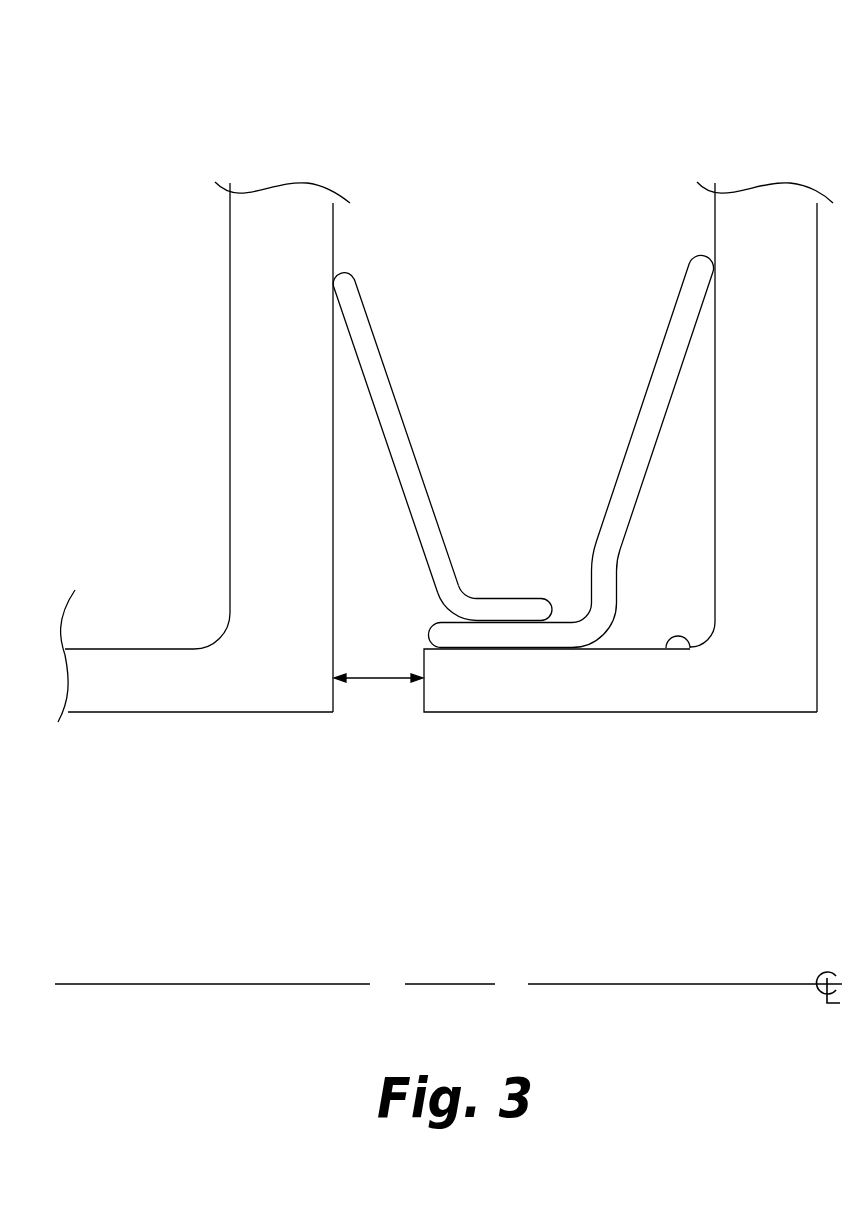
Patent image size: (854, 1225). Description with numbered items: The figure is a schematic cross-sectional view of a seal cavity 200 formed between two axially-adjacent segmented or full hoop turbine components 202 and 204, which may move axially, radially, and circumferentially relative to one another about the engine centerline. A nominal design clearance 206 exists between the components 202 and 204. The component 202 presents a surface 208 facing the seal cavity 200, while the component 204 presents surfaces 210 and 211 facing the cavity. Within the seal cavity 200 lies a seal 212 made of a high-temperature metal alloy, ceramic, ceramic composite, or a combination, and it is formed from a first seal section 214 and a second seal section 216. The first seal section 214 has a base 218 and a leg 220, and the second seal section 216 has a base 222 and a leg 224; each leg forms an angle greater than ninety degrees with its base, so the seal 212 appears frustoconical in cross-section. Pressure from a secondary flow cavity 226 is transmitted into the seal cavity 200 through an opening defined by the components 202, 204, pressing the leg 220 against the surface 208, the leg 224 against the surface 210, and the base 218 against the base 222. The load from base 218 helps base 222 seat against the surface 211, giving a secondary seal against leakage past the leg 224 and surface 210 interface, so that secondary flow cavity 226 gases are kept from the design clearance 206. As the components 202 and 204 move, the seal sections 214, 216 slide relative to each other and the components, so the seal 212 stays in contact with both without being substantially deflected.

The seal cavity 200 is at (581, 158).
The turbine component 202 is at (195, 712).
The turbine component 204 is at (636, 712).
The nominal design clearance 206 is at (378, 680).
The surface 208 is at (333, 232).
The surface 210 is at (715, 232).
The surface 211 is at (688, 650).
The seal 212 is at (523, 438).
The first seal section 214 is at (442, 424).
The second seal section 216 is at (532, 439).
The base 218 is at (493, 598).
The leg 220 is at (368, 325).
The base 222 is at (428, 636).
The leg 224 is at (670, 317).
The secondary flow cavity 226 is at (512, 34).